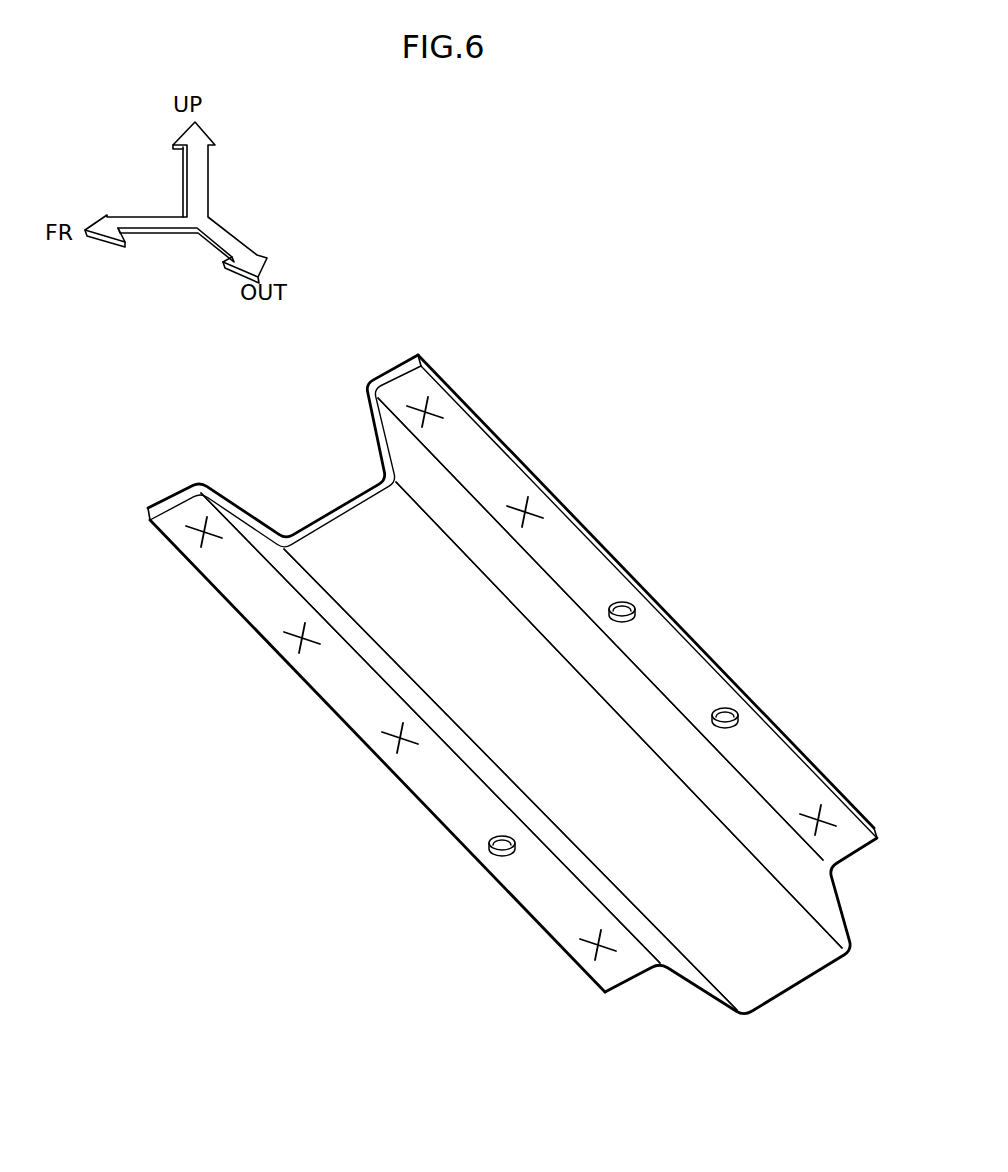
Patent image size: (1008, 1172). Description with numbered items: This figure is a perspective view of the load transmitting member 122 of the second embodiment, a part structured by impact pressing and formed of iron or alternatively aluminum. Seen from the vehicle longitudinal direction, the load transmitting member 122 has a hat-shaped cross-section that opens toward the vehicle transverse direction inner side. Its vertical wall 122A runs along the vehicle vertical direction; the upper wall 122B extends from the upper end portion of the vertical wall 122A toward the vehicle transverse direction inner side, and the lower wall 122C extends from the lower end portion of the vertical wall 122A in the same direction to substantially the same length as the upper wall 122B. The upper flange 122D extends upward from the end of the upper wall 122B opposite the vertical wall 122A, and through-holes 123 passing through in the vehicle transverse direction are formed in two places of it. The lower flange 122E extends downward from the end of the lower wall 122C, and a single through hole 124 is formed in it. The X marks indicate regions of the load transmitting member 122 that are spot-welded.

The load transmitting member 122 is at (685, 445).
The vertical wall 122A is at (340, 510).
The upper wall 122B is at (370, 437).
The lower wall 122C is at (247, 507).
The upper flange 122D is at (482, 452).
The lower flange 122E is at (248, 592).
The through-holes 123 is at (633, 604).
The through hole 124 is at (505, 858).